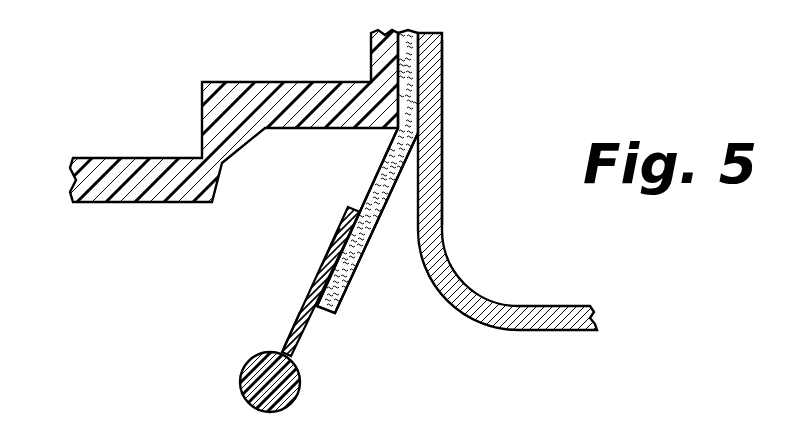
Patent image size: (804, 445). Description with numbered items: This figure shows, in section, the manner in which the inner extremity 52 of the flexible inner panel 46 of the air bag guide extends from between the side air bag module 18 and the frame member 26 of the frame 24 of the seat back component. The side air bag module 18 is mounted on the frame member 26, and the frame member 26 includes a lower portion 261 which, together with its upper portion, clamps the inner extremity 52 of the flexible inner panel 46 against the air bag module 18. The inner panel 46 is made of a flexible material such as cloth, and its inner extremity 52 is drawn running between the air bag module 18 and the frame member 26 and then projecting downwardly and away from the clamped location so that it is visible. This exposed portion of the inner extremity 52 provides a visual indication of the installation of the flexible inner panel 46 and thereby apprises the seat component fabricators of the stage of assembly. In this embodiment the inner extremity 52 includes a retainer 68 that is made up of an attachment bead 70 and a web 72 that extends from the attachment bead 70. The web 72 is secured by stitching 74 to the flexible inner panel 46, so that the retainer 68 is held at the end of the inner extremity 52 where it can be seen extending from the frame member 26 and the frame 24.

The side air bag module 18 is at (287, 130).
The frame 24 is at (512, 343).
The frame member 26 is at (476, 276).
The lower portion of the frame member 261 is at (438, 118).
The inner panel 46 is at (428, 62).
The inner extremity 52 is at (402, 168).
The retainer 68 is at (310, 344).
The attachment bead 70 is at (297, 398).
The web 72 is at (299, 312).
The stitching 74 is at (359, 265).